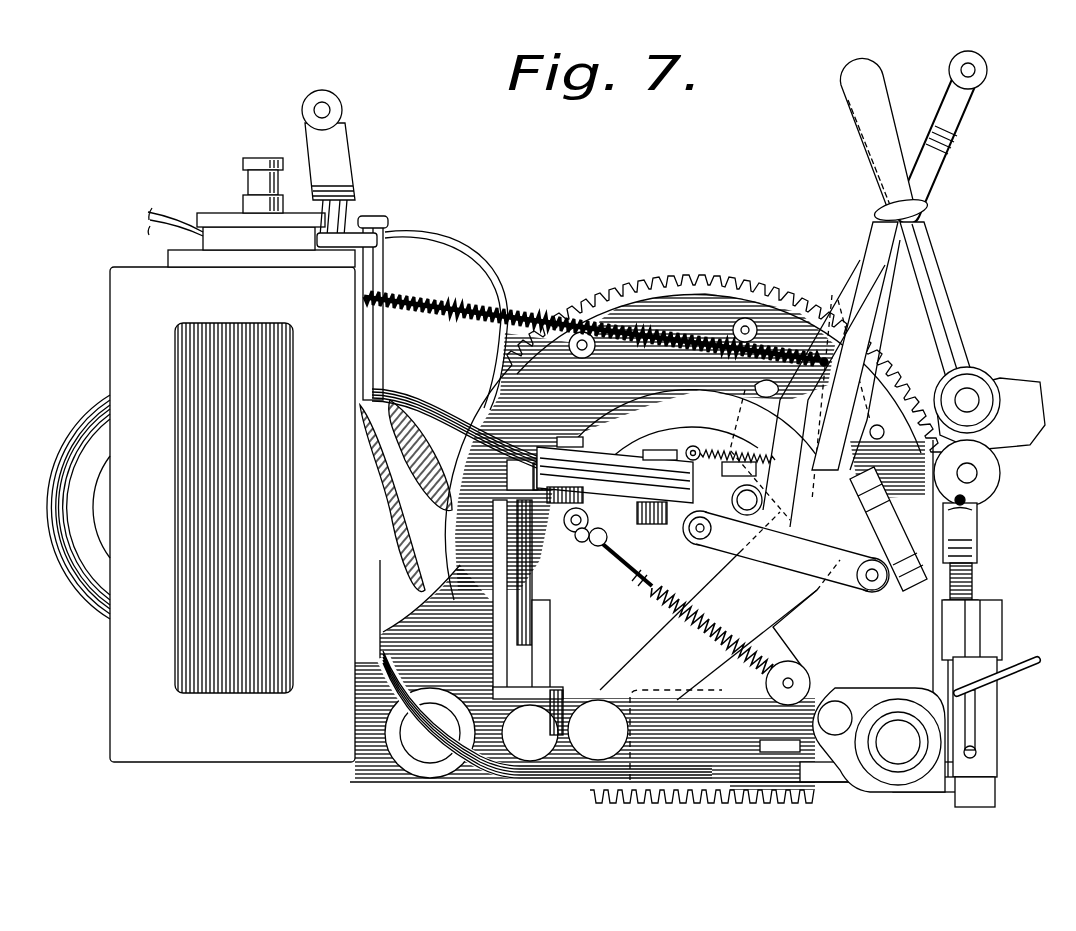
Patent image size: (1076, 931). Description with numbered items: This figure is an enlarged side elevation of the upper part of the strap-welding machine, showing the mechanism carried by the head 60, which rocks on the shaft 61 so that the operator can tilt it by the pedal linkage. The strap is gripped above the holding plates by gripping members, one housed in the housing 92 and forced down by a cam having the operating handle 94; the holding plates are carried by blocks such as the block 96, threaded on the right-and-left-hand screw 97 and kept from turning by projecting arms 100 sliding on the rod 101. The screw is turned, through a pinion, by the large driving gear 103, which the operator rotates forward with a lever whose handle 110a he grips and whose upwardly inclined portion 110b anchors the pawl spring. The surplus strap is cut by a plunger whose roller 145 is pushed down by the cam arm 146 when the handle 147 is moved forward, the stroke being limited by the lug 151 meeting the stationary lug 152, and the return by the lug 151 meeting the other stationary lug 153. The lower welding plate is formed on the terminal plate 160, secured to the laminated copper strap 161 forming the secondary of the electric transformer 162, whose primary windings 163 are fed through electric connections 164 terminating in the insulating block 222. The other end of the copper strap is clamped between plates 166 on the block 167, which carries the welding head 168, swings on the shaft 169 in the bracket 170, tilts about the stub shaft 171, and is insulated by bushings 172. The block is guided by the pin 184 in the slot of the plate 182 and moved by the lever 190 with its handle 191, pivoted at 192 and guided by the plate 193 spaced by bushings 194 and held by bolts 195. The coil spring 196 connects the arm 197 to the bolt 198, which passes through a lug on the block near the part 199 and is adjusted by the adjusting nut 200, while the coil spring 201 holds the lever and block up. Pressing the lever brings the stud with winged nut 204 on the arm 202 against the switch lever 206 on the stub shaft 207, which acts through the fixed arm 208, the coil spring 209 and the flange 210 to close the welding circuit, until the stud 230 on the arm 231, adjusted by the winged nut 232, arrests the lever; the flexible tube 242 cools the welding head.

The head 60 is at (661, 688).
The shaft 61 is at (430, 748).
The housing 92 is at (997, 772).
The operating handle 94 is at (1005, 672).
The block 96 is at (930, 796).
The screw 97 is at (879, 740).
The projecting arms 100 is at (978, 792).
The rod 101 is at (836, 708).
The driving gear 103 is at (700, 280).
The handle 110a is at (342, 100).
The upwardly inclined portion 110b is at (357, 205).
The roller 145 is at (1002, 474).
The cam arm 146 is at (1008, 432).
The handle 147 is at (945, 302).
The lug 151 is at (940, 368).
The stationary lug 152 is at (1000, 393).
The stationary lug 153 is at (958, 385).
The terminal plate 160 is at (688, 798).
The laminated copper strap 161 is at (566, 778).
The electric transformer 162 is at (232, 460).
The primary windings 163 is at (97, 548).
The electric connections 164 is at (386, 231).
The plates 166 is at (608, 470).
The block 167 is at (742, 690).
The head 168 is at (1002, 632).
The shaft 169 is at (528, 596).
The bracket 170 is at (542, 650).
The stub shaft 171 is at (533, 722).
The bushings 172 is at (470, 500).
The plate 182 is at (976, 572).
The pin 184 is at (976, 548).
The lever 190 is at (850, 237).
The handle 191 is at (968, 52).
The pivot 192 is at (598, 730).
The plate 193 is at (786, 551).
The bushings 194 is at (725, 606).
The bolts 195 is at (872, 590).
The coil spring 196 is at (712, 630).
The arm 197 is at (805, 672).
The bolt 198 is at (622, 568).
The nut 199 is at (588, 524).
The adjusting nut 200 is at (570, 540).
The coil spring 201 is at (530, 312).
The arm 202 is at (694, 426).
The winged nut 204 is at (756, 390).
The switch lever 206 is at (727, 526).
The stub shaft 207 is at (733, 495).
The fixed arm 208 is at (727, 443).
The coil spring 209 is at (712, 455).
The flange 210 is at (688, 449).
The insulating block 222 is at (445, 415).
The stud 230 is at (978, 502).
The arm 231 is at (880, 380).
The winged nut 232 is at (800, 395).
The flexible tube 242 is at (980, 522).